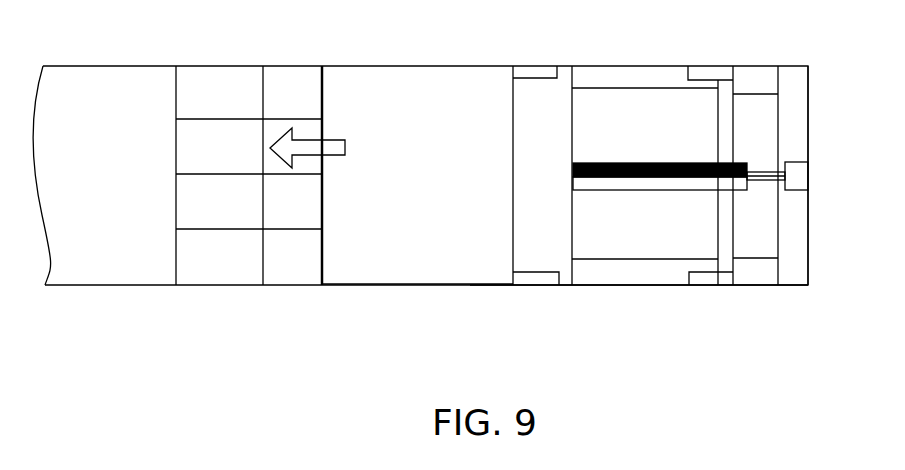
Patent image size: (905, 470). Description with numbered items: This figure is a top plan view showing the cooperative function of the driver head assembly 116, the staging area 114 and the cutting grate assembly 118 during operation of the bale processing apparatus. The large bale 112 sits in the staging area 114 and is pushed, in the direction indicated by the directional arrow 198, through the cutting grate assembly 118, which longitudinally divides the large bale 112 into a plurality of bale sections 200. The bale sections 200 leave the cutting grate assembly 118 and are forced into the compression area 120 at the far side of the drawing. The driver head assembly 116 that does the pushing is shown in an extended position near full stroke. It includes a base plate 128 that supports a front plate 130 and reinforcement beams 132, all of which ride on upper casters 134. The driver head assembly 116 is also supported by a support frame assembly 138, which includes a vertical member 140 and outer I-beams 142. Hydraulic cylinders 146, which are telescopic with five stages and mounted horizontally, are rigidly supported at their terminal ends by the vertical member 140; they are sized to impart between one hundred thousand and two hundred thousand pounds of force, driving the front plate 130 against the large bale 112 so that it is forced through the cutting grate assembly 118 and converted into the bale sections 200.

The large bale 112 is at (448, 187).
The staging area 114 is at (489, 300).
The driver head assembly 116 is at (722, 306).
The cutting grate assembly 118 is at (283, 297).
The compression area 120 is at (112, 182).
The base plate 128 is at (695, 158).
The front plate 130 is at (632, 175).
The reinforcement beams 132 is at (640, 82).
The upper casters 134 is at (703, 70).
The support frame assembly 138 is at (824, 258).
The vertical member 140 is at (798, 174).
The outer I-beams 142 is at (758, 80).
The hydraulic cylinders 146 is at (712, 184).
The directional arrow 198 is at (335, 148).
The bale sections 200 is at (188, 92).